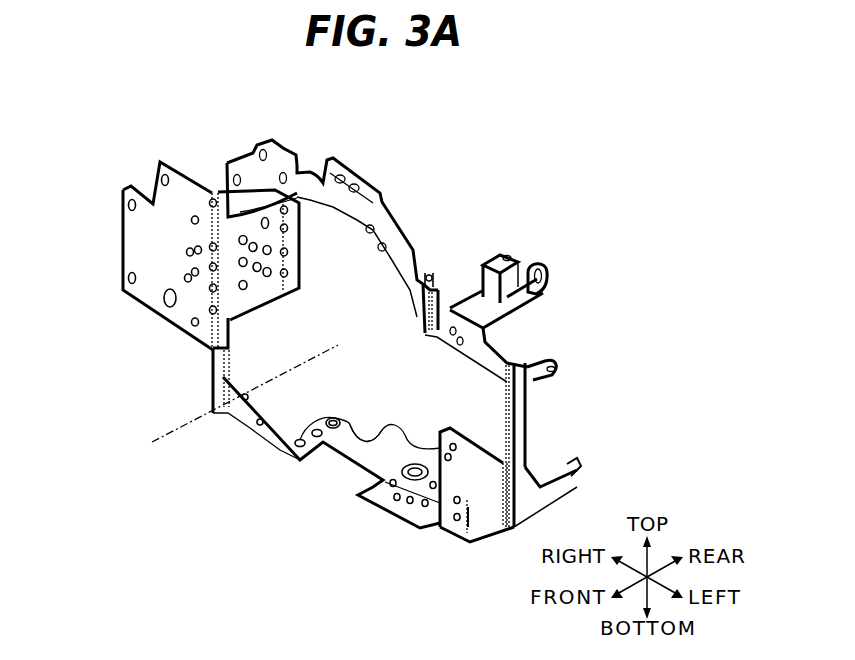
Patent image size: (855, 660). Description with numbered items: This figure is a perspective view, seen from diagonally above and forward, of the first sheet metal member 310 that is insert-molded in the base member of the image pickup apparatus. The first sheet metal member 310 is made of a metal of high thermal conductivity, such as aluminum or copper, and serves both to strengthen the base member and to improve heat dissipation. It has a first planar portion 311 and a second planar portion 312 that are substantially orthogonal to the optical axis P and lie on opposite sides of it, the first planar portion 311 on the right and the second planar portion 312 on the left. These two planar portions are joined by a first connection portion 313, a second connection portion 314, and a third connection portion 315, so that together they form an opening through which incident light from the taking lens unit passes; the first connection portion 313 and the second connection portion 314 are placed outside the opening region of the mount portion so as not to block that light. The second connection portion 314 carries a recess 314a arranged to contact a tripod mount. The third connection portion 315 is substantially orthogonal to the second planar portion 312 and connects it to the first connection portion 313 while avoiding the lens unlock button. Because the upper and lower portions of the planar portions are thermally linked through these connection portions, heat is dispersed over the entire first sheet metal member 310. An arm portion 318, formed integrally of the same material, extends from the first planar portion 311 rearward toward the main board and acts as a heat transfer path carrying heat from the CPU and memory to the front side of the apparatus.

The first sheet metal member 310 is at (362, 150).
The first planar portion 311 is at (183, 188).
The second planar portion 312 is at (473, 490).
The first connection portion 313 is at (380, 227).
The second connection portion 314 is at (342, 457).
The recess 314a is at (392, 452).
The third connection portion 315 is at (527, 450).
The arm portion 318 is at (253, 220).
The optical axis P is at (157, 440).